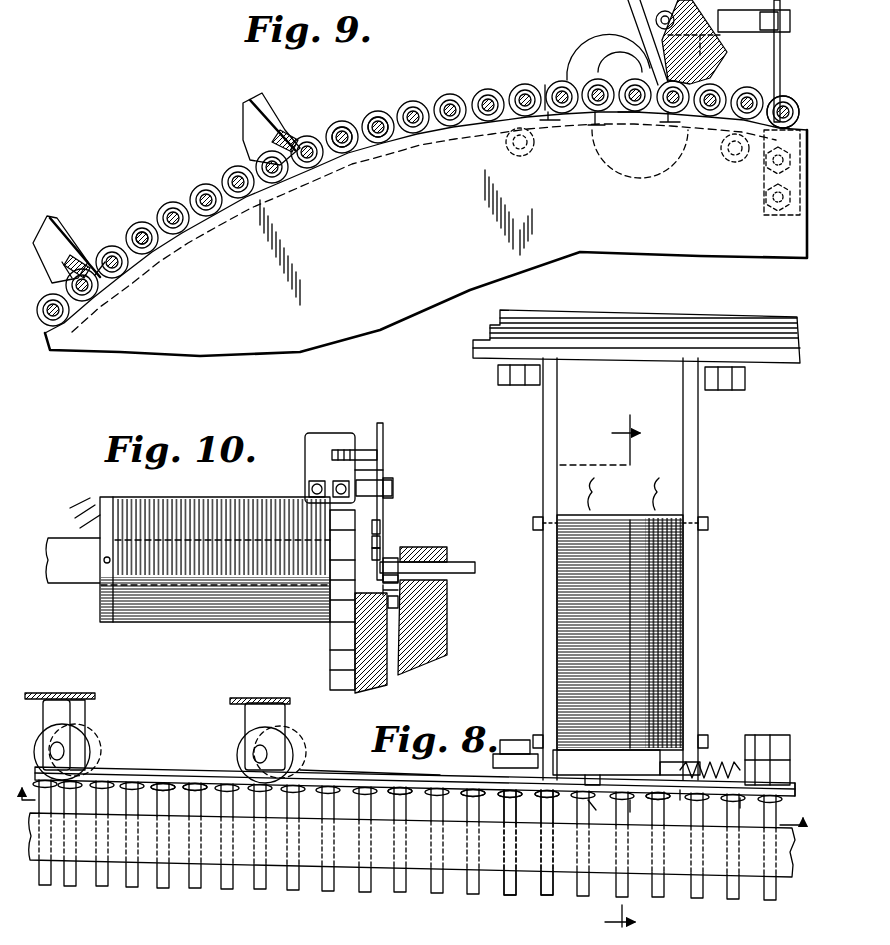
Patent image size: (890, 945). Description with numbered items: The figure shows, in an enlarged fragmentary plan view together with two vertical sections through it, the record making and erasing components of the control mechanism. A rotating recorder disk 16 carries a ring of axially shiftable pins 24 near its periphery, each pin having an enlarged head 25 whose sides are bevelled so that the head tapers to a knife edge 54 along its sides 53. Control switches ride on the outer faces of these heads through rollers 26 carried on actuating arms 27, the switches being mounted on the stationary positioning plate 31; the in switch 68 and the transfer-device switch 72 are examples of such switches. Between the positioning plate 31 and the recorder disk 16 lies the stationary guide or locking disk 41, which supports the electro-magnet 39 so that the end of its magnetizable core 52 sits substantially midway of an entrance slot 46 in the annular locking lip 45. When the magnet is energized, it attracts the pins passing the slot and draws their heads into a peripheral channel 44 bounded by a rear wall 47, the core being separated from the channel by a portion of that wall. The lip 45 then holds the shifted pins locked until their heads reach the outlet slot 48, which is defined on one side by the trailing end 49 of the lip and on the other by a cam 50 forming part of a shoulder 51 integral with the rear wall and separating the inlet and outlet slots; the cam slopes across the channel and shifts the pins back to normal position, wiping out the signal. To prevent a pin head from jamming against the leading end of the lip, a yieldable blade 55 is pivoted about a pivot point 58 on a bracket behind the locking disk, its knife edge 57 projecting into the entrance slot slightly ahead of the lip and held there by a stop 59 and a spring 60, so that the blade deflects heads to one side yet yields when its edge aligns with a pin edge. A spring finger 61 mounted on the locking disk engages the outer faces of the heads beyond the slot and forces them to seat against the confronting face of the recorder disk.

In FIG. 10, the recorder disk 16 is at (447, 660).
In FIG. 8, the recorder disk 16 is at (790, 880).
In FIG. 9, the pins 24 is at (142, 238).
In FIG. 10, the pins 24 is at (470, 562).
In FIG. 8, the pins 24 is at (195, 890).
In FIG. 9, the enlarged head 25 is at (206, 200).
In FIG. 10, the enlarged head 25 is at (390, 558).
In FIG. 8, the enlarged head 25 is at (160, 782).
In FIG. 9, the rollers 26 is at (90, 262).
In FIG. 8, the rollers 26 is at (88, 748).
In FIG. 9, the actuating arms 27 is at (76, 252).
In FIG. 8, the actuating arms 27 is at (50, 700).
In FIG. 8, the stationary positioning plate 31 is at (790, 364).
In FIG. 9, the electro-magnet 39 is at (600, 45).
In FIG. 10, the electro-magnet 39 is at (210, 622).
In FIG. 8, the electro-magnet 39 is at (683, 612).
In FIG. 9, the guide or locking disk 41 is at (420, 300).
In FIG. 10, the guide or locking disk 41 is at (365, 690).
In FIG. 8, the guide or locking disk 41 is at (192, 767).
In FIG. 9, the peripheral channel 44 is at (140, 272).
In FIG. 8, the peripheral channel 44 is at (793, 783).
In FIG. 9, the annular locking lip 45 is at (795, 120).
In FIG. 8, the annular locking lip 45 is at (405, 800).
In FIG. 9, the entrance slot 46 is at (625, 118).
In FIG. 10, the entrance slot 46 is at (398, 602).
In FIG. 8, the entrance slot 46 is at (605, 800).
In FIG. 8, the rear wall 47 is at (330, 778).
In FIG. 9, the outlet slot 48 is at (550, 120).
In FIG. 8, the outlet slot 48 is at (545, 800).
In FIG. 9, the trailing end of the lip 49 is at (505, 145).
In FIG. 8, the trailing end of the lip 49 is at (510, 800).
In FIG. 9, the cam 50 is at (545, 88).
In FIG. 8, the cam 50 is at (530, 745).
In FIG. 9, the shoulder 51 is at (598, 125).
In FIG. 8, the shoulder 51 is at (580, 775).
In FIG. 9, the magnetizable core 52 is at (672, 122).
In FIG. 10, the magnetizable core 52 is at (392, 592).
In FIG. 8, the magnetizable core 52 is at (672, 762).
In FIG. 9, the bevelled sides 53 is at (342, 137).
In FIG. 10, the bevelled sides 53 is at (380, 554).
In FIG. 8, the bevelled sides 53 is at (470, 790).
In FIG. 9, the knife edge 54 is at (378, 127).
In FIG. 10, the knife edge 54 is at (380, 542).
In FIG. 8, the knife edge 54 is at (190, 782).
In FIG. 9, the blade 55 is at (722, 62).
In FIG. 10, the blade 55 is at (383, 432).
In FIG. 8, the blade 55 is at (700, 805).
In FIG. 9, the knife edge of the blade 57 is at (620, 70).
In FIG. 10, the knife edge of the blade 57 is at (380, 527).
In FIG. 8, the knife edge of the blade 57 is at (635, 810).
In FIG. 9, the pivot point 58 is at (656, 20).
In FIG. 10, the pivot point 58 is at (392, 488).
In FIG. 10, the stop 59 is at (383, 465).
In FIG. 10, the spring 60 is at (345, 450).
In FIG. 8, the spring 60 is at (760, 738).
In FIG. 9, the spring finger 61 is at (760, 155).
In FIG. 10, the spring finger 61 is at (398, 582).
In FIG. 8, the spring finger 61 is at (745, 810).
In FIG. 9, the in switch 68 is at (55, 218).
In FIG. 8, the in switch 68 is at (85, 697).
In FIG. 9, the control switch 72 is at (272, 98).
In FIG. 8, the control switch 72 is at (235, 698).